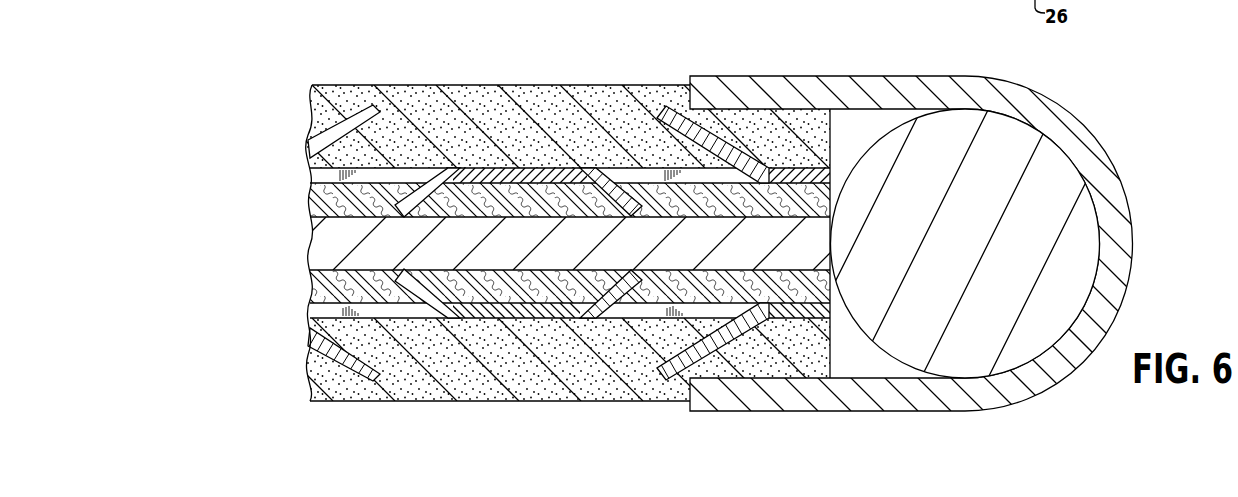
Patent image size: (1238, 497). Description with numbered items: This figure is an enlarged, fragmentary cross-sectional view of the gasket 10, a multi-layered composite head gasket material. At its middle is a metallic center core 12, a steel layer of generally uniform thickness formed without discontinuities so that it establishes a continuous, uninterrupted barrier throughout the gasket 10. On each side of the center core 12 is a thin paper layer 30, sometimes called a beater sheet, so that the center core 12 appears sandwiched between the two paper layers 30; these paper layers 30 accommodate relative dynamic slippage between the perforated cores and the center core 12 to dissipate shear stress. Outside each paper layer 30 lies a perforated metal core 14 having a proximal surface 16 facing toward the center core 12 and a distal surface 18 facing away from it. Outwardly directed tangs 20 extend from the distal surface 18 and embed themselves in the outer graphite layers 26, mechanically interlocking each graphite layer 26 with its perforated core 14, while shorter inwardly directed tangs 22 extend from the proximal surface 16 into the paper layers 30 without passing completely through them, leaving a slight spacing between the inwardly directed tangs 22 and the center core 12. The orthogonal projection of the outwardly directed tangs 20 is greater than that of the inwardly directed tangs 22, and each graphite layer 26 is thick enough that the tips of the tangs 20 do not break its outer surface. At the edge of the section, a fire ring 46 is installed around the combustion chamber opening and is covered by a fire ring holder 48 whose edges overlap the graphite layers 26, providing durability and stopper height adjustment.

The gasket 10 is at (671, 63).
The center core layer 12 is at (322, 246).
The perforated metal core layer 14 is at (417, 159).
The proximal surface 16 is at (513, 257).
The distal surface 18 is at (540, 236).
The outwardly directed tang 20 is at (380, 110).
The inwardly directed tang 22 is at (395, 212).
The outer graphite layer 26 is at (527, 77).
The paper layer 30 is at (304, 202).
The fire ring 46 is at (982, 253).
The fire ring holder 48 is at (920, 72).